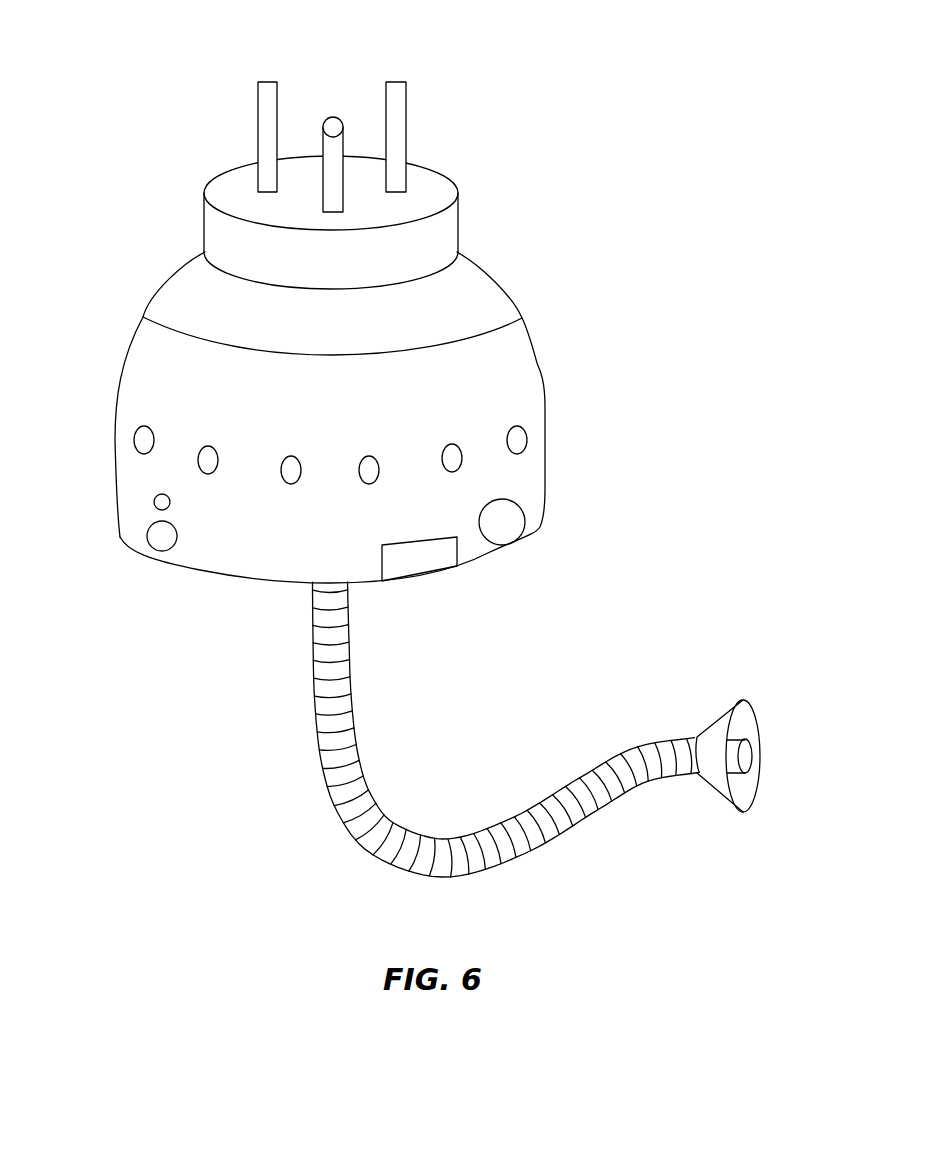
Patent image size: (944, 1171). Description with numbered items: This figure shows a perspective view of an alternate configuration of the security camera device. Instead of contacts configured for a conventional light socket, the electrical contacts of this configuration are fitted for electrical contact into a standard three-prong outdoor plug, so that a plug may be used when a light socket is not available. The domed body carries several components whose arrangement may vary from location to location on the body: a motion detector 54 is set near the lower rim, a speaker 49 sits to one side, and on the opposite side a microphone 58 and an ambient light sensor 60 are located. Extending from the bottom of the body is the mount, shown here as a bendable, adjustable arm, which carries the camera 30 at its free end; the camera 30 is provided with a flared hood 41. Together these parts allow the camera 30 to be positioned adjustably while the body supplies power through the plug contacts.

The ambient light sensor 60 is at (154, 503).
The microphone 58 is at (147, 534).
The speaker 49 is at (517, 520).
The motion detector 54 is at (432, 563).
The hood 41 is at (742, 702).
The camera 30 is at (746, 757).